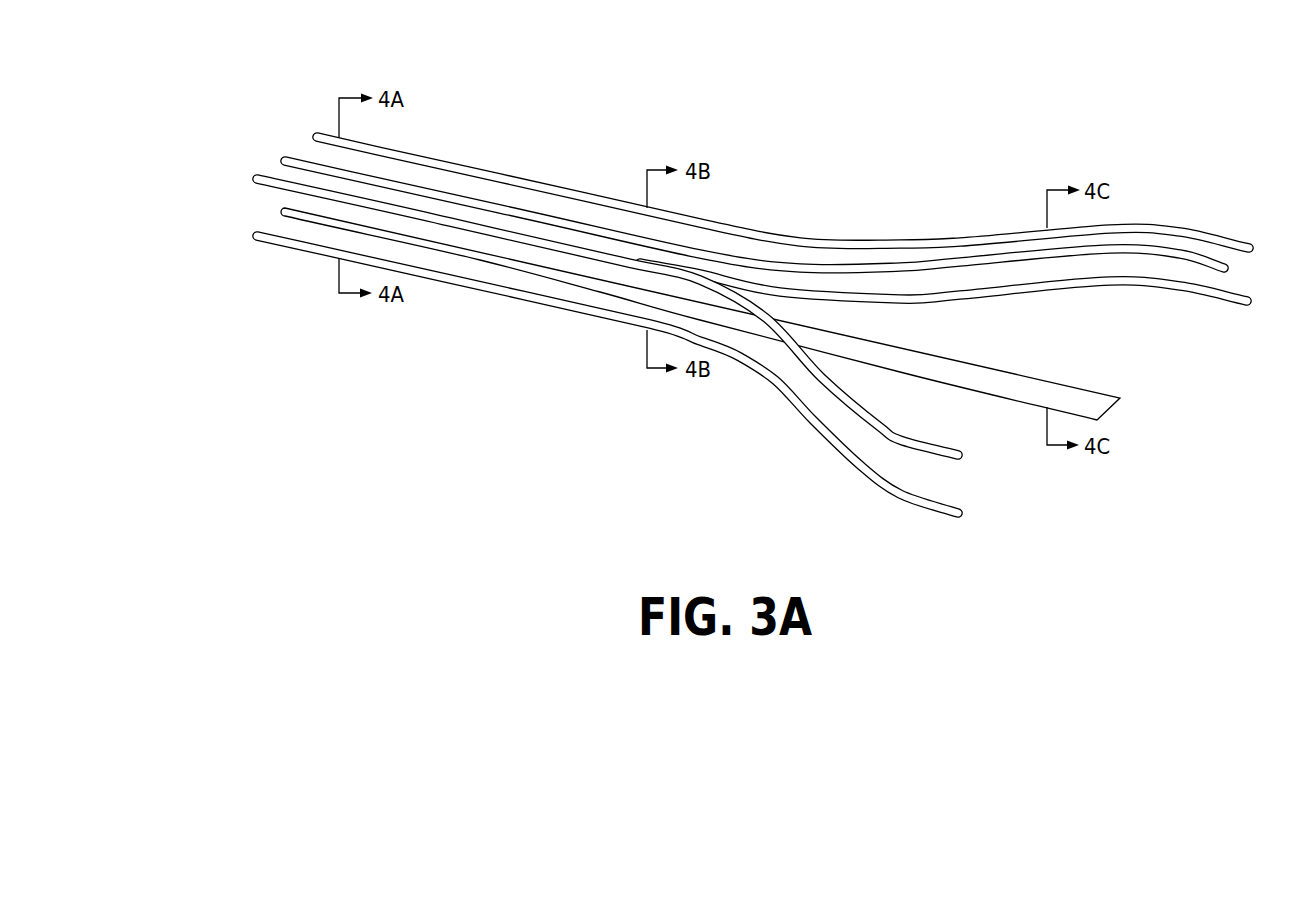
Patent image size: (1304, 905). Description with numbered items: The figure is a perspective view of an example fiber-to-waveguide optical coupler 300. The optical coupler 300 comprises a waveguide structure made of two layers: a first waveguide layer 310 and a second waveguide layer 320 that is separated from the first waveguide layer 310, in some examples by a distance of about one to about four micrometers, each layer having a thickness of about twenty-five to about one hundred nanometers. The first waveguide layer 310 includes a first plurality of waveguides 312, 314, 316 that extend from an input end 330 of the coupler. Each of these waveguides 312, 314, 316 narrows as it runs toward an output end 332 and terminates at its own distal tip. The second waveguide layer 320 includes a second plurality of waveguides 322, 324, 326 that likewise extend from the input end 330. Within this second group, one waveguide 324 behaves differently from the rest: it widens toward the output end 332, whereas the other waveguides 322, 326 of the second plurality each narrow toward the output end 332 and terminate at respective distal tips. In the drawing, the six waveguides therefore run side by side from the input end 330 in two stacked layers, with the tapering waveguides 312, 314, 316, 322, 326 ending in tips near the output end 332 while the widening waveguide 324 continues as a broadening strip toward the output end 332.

The fiber-to-waveguide optical coupler 300 is at (714, 273).
The first waveguide layer 310 is at (727, 254).
The waveguide of first plurality of waveguides 312 is at (536, 182).
The waveguide of first plurality of waveguides 314 is at (488, 196).
The waveguide of first plurality of waveguides 316 is at (900, 438).
The second waveguide layer 320 is at (713, 330).
The waveguide of second plurality of waveguides 322 is at (488, 294).
The waveguide of second plurality of waveguides 324 is at (551, 284).
The waveguide of second plurality of waveguides 326 is at (1099, 288).
The input end 330 is at (320, 106).
The output end 332 is at (1190, 450).